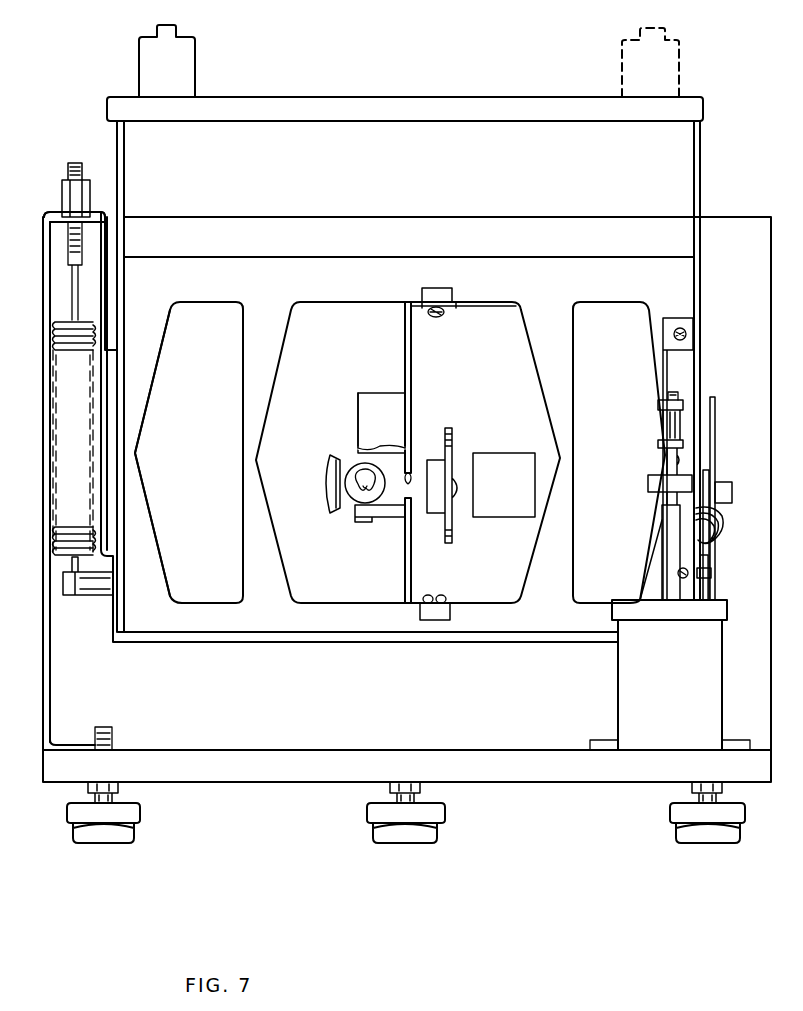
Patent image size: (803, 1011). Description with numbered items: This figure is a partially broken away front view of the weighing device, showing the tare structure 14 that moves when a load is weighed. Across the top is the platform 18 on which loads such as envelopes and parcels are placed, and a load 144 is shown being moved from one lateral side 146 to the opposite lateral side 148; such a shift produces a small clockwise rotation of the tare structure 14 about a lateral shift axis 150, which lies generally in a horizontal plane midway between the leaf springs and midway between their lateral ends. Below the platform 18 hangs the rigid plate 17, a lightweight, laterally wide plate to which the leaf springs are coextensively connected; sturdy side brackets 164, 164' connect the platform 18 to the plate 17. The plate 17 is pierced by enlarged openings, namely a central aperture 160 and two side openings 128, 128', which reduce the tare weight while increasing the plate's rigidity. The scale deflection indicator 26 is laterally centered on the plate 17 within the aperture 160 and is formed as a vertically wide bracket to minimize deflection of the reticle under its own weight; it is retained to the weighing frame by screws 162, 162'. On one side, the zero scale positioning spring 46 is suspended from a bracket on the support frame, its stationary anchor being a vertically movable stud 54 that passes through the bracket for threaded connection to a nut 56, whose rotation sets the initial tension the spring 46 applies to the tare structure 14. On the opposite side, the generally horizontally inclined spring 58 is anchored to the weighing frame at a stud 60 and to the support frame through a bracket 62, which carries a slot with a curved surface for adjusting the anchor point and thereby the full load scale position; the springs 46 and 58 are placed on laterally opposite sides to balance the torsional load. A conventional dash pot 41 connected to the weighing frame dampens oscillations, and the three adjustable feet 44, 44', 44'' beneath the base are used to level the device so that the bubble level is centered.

The tare structure 14 is at (337, 206).
The rigid plate 17 is at (143, 400).
The platform 18 is at (416, 97).
The scale deflection indicator 26 is at (411, 354).
The dash pot 41 is at (618, 681).
The foot 44 is at (91, 826).
The foot 44' is at (693, 832).
The foot 44'' is at (394, 833).
The zero scale positioning spring 46 is at (55, 342).
The vertically movable stud 54 is at (68, 272).
The nut 56 is at (63, 200).
The horizontally inclined spring 58 is at (726, 531).
The stud 60 is at (711, 574).
The bracket 62 is at (716, 426).
The opening 128 is at (619, 436).
The opening 128' is at (197, 436).
The load 144 is at (196, 48).
The lateral side 146 is at (126, 45).
The lateral side 148 is at (730, 44).
The lateral shift axis 150 is at (410, 482).
The aperture 160 is at (345, 318).
The screw 162 is at (460, 313).
The screw 162' is at (461, 593).
The side bracket 164 is at (147, 376).
The side bracket 164' is at (726, 360).